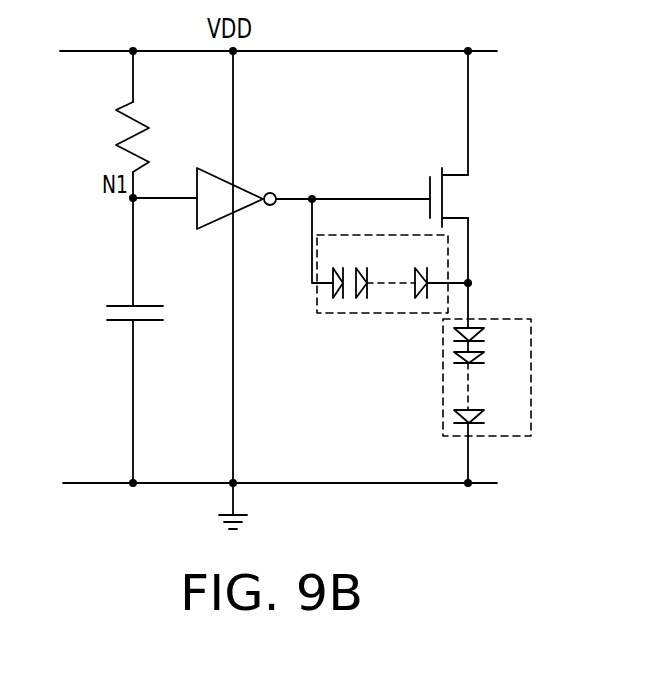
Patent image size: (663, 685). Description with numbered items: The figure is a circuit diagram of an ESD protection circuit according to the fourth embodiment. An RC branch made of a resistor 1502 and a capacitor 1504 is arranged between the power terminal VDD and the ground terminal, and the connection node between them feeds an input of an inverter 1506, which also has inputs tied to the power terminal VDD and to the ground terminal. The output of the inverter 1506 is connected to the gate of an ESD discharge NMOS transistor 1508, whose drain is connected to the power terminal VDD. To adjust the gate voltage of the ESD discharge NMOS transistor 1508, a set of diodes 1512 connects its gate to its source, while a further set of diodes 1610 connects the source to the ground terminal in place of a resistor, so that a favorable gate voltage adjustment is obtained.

The resistor 1502 is at (122, 137).
The capacitor 1504 is at (120, 305).
The inverter 1506 is at (243, 212).
The ESD discharge NMOS transistor 1508 is at (456, 172).
The set of diodes 1512 is at (347, 313).
The set of diodes 1610 is at (532, 360).